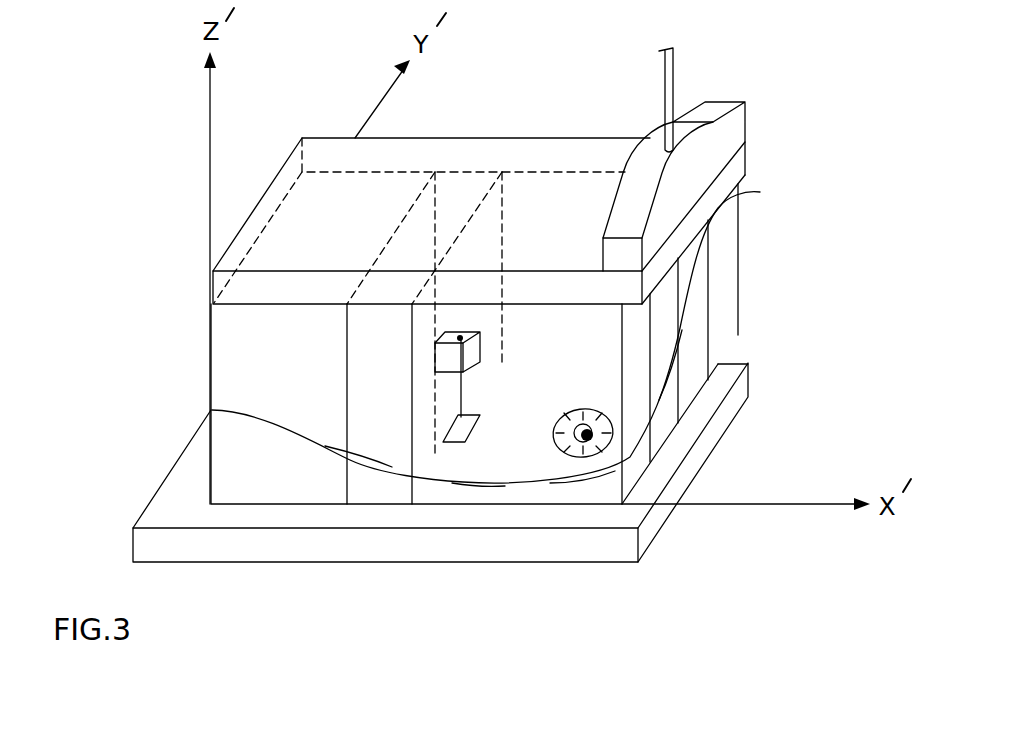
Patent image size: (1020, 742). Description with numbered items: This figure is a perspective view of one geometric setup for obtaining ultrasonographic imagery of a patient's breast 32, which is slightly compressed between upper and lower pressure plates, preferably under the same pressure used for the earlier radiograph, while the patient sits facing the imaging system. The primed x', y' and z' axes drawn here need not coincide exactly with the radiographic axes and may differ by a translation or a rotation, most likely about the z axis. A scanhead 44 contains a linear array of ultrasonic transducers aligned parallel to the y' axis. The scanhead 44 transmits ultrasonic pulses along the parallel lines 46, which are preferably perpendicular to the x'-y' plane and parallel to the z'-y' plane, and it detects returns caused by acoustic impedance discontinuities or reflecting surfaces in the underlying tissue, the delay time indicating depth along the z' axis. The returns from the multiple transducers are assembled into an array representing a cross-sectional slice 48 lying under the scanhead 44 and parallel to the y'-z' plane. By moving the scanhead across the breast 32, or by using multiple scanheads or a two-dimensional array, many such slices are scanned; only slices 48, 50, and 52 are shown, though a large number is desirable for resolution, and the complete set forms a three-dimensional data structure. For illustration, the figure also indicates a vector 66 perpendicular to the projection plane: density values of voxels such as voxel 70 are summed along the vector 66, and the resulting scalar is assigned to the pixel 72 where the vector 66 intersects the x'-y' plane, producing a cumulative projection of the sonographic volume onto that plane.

The breast 32 is at (553, 452).
The scanhead 44 is at (722, 130).
The parallel lines 46 is at (740, 245).
The slice 48 is at (699, 318).
The slice 50 is at (494, 202).
The slice 52 is at (422, 215).
The vector 66 is at (412, 502).
The voxel 70 is at (447, 363).
The pixel 72 is at (470, 435).